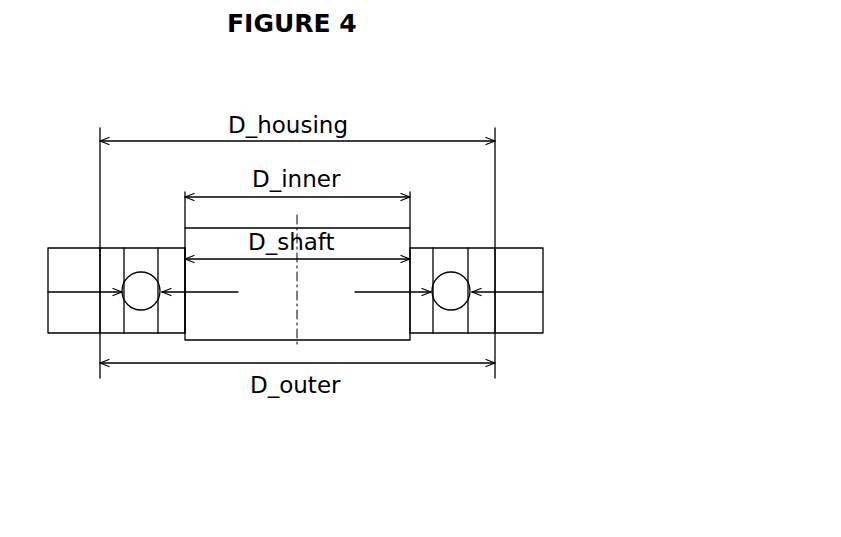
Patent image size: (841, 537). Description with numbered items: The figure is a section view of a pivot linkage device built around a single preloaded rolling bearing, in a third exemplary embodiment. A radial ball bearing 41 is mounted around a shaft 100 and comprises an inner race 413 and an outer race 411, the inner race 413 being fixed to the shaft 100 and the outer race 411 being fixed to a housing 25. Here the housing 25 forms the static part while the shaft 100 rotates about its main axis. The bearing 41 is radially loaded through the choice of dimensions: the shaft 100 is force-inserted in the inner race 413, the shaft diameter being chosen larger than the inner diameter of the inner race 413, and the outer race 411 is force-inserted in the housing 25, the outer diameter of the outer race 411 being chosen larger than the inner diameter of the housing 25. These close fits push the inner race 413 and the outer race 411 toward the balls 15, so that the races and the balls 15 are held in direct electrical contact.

The radial ball bearing 41 is at (114, 228).
The outer race 411 is at (486, 253).
The inner race 413 is at (172, 317).
The balls 15 is at (451, 302).
The housing 25 is at (535, 317).
The shaft 100 is at (337, 328).